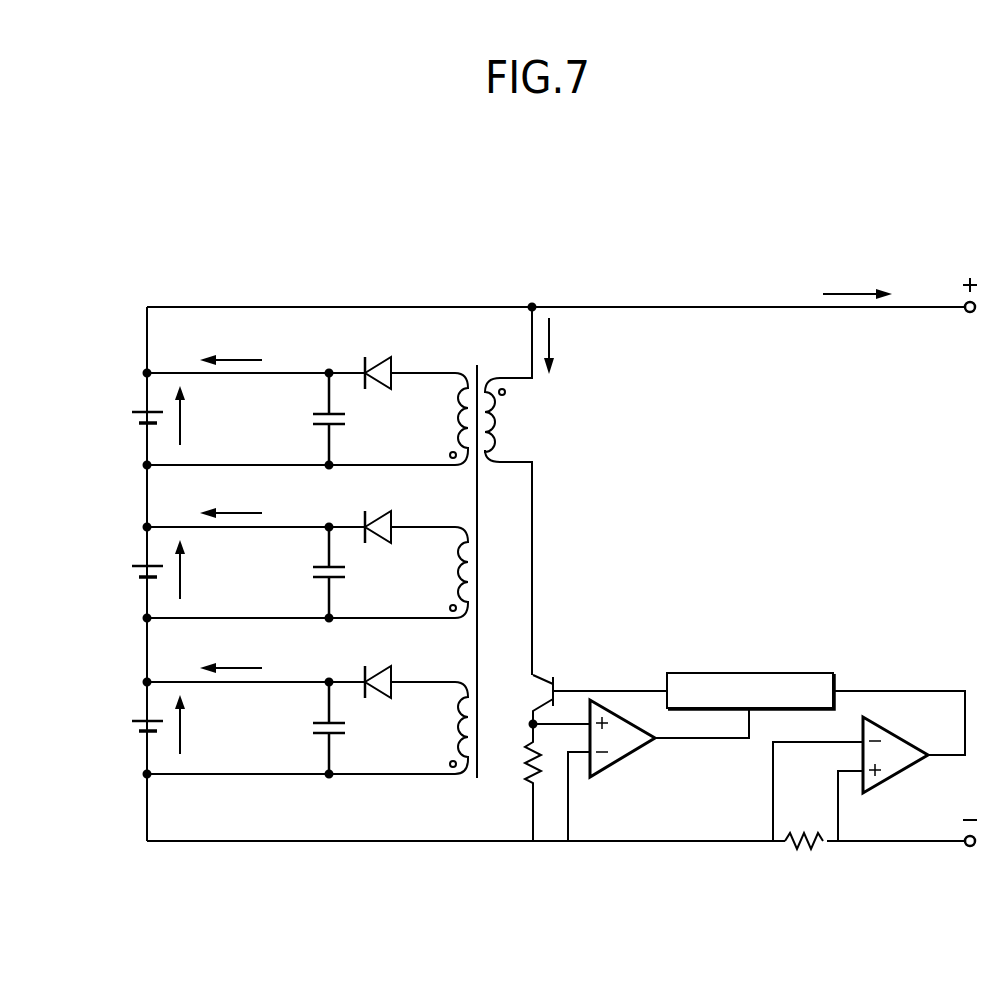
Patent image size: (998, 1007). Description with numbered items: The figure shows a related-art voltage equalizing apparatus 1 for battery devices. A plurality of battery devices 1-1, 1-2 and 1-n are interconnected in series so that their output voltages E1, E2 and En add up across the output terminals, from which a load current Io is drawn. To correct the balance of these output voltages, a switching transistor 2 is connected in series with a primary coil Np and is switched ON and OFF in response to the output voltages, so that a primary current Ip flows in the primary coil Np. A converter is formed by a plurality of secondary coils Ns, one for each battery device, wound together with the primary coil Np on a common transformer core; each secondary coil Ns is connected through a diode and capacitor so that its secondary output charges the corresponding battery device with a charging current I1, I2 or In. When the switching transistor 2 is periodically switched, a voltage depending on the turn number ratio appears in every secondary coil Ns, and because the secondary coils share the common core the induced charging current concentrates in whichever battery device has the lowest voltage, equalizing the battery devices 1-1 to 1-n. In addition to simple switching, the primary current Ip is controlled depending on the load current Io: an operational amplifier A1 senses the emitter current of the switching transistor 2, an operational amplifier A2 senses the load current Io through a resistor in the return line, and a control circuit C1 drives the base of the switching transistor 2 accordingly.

The voltage equalizing apparatus 1 is at (911, 230).
The battery device 1-1 is at (146, 419).
The battery device 1-2 is at (146, 573).
The battery device 1-n is at (146, 728).
The switching transistor 2 is at (600, 686).
The control circuit C1 is at (828, 650).
The operational amplifier A1 is at (658, 769).
The operational amplifier A2 is at (853, 773).
The secondary coil Ns is at (438, 573).
The primary coil Np is at (516, 491).
The output voltage E1 is at (195, 415).
The output voltage E2 is at (195, 569).
The output voltage En is at (195, 724).
The charging current I1 is at (231, 350).
The charging current I2 is at (231, 503).
The charging current In is at (231, 658).
The load current Io is at (857, 283).
The primary current Ip is at (561, 346).